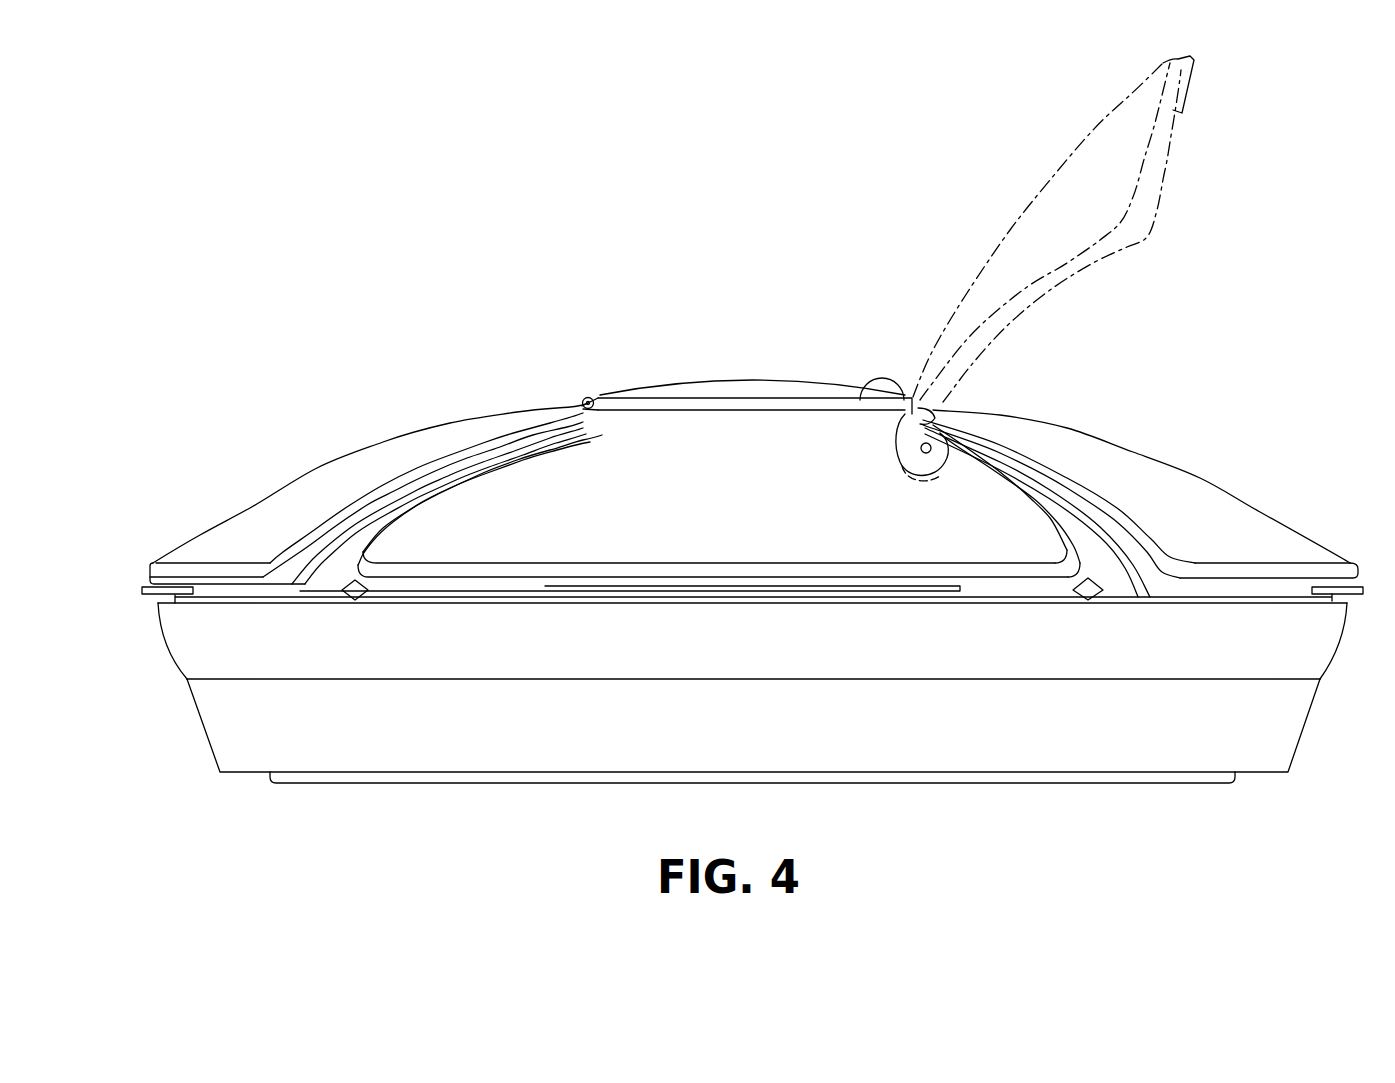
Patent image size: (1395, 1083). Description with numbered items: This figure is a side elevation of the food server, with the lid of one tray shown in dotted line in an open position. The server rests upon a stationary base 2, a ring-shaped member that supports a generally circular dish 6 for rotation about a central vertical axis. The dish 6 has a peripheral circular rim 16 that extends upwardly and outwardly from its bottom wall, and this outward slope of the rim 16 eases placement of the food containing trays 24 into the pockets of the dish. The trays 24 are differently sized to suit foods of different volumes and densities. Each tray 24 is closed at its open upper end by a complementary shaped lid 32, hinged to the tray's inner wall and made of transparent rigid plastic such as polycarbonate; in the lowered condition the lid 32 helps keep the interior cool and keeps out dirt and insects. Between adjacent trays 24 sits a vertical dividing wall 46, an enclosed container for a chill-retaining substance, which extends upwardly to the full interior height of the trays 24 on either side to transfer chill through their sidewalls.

The stationary base 2 is at (752, 464).
The dish 6 is at (776, 698).
The peripheral circular rim 16 is at (1342, 648).
The food containing trays 24 is at (210, 598).
The lid 32 is at (263, 533).
The vertical dividing wall 46 is at (328, 582).